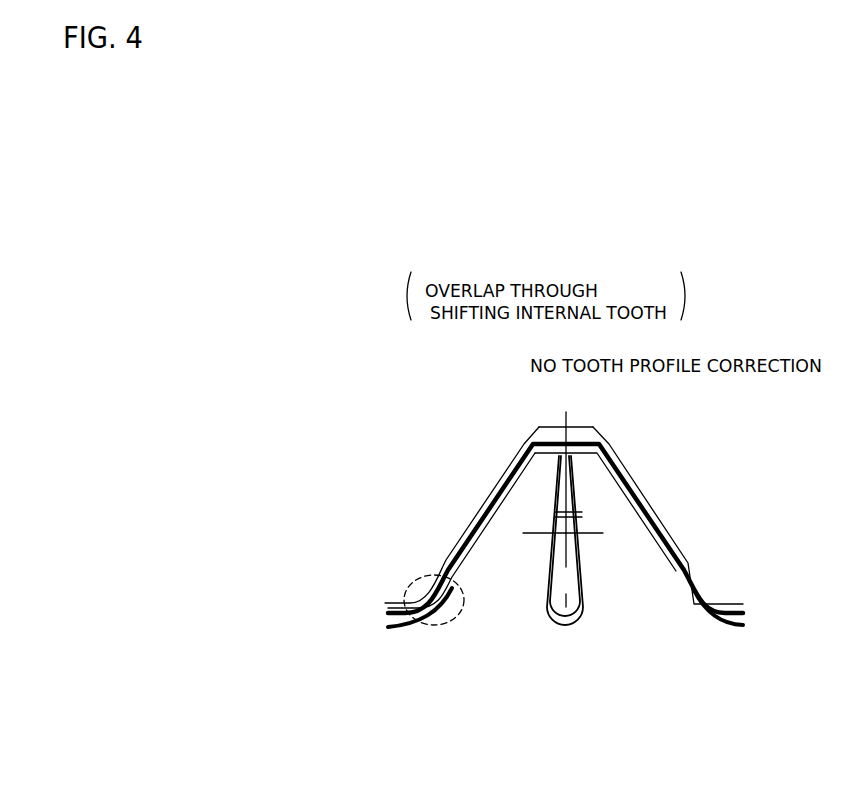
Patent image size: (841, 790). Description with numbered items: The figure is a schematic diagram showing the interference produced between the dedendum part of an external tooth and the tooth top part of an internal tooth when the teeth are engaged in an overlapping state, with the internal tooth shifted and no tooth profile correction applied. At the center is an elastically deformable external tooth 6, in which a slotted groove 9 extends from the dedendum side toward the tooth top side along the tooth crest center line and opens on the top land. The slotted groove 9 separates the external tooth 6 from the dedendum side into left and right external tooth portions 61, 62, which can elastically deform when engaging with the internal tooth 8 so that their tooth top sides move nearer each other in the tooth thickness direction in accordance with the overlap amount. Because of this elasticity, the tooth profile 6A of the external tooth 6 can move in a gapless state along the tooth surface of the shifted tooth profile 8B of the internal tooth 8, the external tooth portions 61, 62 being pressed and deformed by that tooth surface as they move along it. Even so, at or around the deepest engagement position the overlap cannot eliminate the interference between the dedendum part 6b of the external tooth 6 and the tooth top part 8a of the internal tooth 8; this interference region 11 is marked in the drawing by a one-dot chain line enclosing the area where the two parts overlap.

The internal tooth 8 is at (405, 550).
The shifted tooth profile 8B is at (497, 480).
The tooth top part 8a is at (417, 598).
The external tooth 6 is at (547, 666).
The tooth profile 6A is at (484, 546).
The dedendum part 6b is at (443, 623).
The external tooth portion 61 is at (531, 572).
The external tooth portion 62 is at (634, 572).
The slotted groove 9 is at (573, 590).
The interference region 11 is at (433, 625).